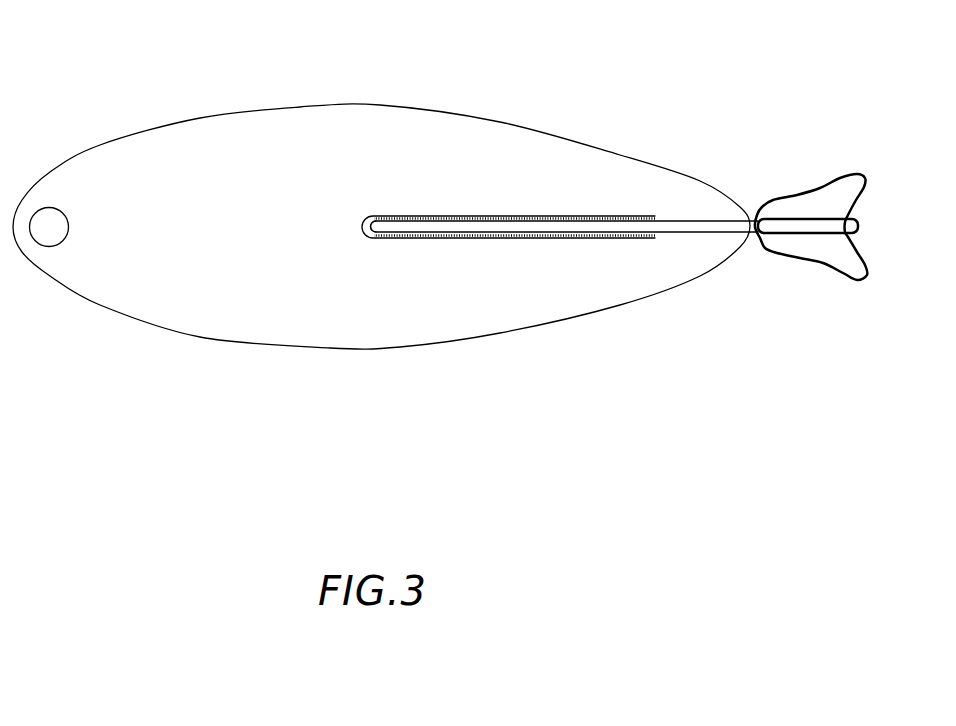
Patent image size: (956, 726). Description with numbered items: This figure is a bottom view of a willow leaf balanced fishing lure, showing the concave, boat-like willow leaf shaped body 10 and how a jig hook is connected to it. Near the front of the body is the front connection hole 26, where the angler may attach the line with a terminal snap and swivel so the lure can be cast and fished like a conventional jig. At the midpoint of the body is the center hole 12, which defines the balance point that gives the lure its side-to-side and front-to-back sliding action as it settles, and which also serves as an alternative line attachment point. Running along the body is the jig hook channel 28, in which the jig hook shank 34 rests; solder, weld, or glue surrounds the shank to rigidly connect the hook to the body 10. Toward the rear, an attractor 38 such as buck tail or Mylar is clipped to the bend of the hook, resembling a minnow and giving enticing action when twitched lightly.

The willow leaf shaped body 10 is at (257, 133).
The center hole 12 is at (363, 234).
The front connection hole 26 is at (49, 207).
The jig hook channel 28 is at (555, 238).
The jig hook shank 34 is at (711, 222).
The attractor 38 is at (813, 200).